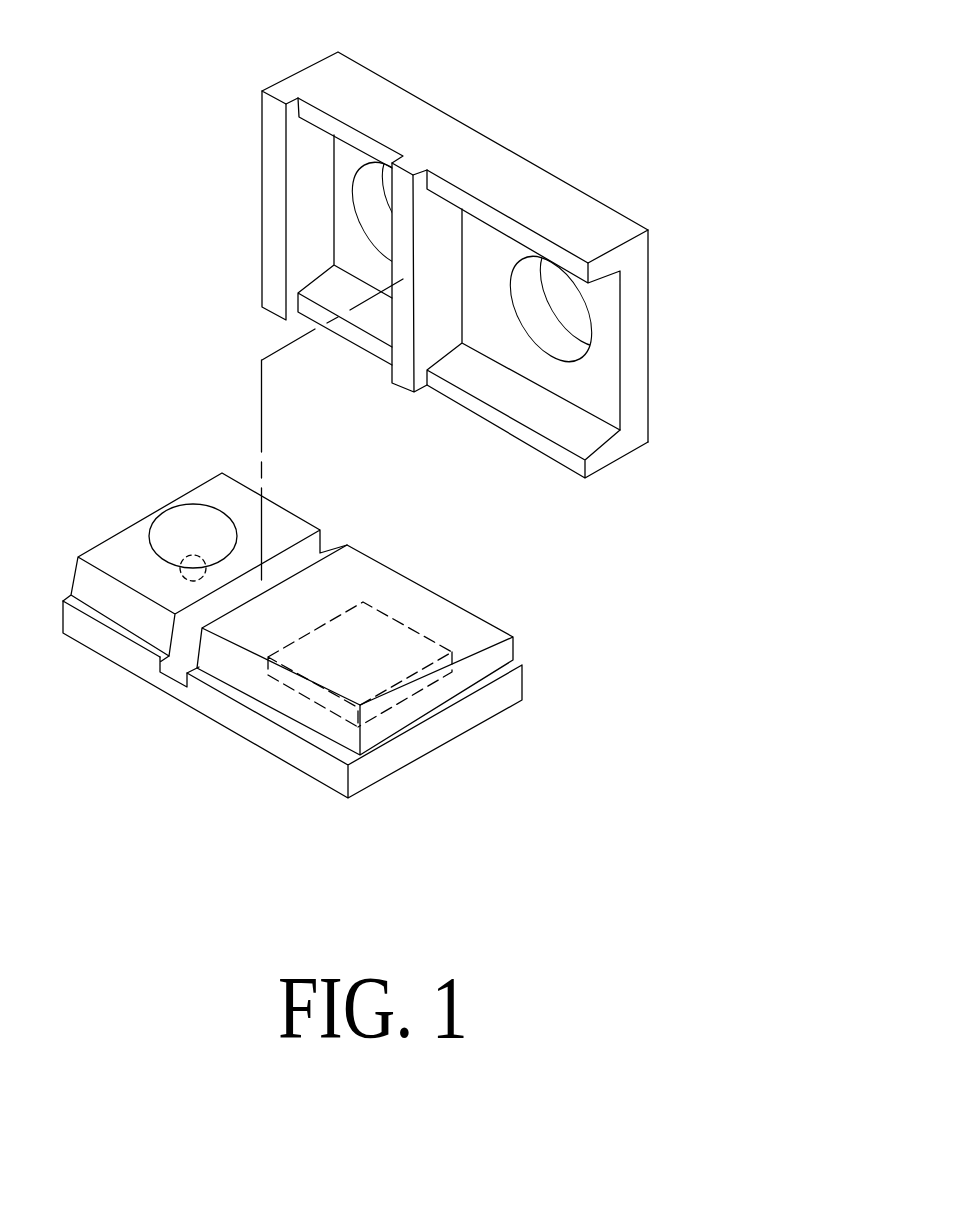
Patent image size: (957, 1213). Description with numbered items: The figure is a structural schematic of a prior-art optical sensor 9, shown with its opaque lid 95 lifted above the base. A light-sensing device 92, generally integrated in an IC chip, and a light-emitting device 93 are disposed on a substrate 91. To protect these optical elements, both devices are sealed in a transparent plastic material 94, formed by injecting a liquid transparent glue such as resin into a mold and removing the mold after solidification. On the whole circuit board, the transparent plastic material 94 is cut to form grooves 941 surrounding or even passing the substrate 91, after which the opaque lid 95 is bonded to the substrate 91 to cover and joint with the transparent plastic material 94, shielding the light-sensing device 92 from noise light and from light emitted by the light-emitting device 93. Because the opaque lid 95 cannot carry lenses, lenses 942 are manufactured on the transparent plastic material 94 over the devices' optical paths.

The optical sensor 9 is at (665, 184).
The opaque lid 95 is at (640, 414).
The substrate 91 is at (285, 755).
The transparent plastic material 94 is at (472, 628).
The groove 941 is at (119, 621).
The lens 942 is at (195, 510).
The light-emitting device 93 is at (177, 562).
The light-sensing device 92 is at (395, 625).